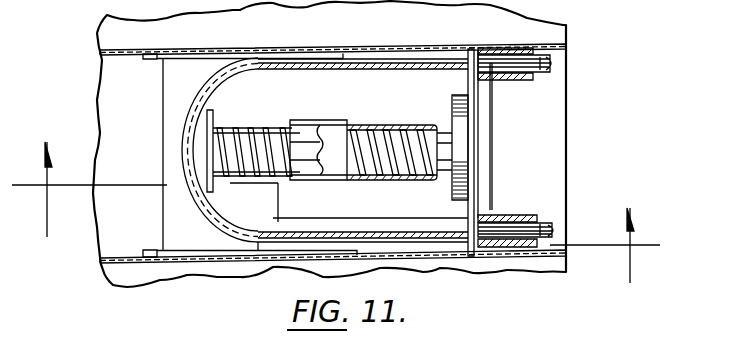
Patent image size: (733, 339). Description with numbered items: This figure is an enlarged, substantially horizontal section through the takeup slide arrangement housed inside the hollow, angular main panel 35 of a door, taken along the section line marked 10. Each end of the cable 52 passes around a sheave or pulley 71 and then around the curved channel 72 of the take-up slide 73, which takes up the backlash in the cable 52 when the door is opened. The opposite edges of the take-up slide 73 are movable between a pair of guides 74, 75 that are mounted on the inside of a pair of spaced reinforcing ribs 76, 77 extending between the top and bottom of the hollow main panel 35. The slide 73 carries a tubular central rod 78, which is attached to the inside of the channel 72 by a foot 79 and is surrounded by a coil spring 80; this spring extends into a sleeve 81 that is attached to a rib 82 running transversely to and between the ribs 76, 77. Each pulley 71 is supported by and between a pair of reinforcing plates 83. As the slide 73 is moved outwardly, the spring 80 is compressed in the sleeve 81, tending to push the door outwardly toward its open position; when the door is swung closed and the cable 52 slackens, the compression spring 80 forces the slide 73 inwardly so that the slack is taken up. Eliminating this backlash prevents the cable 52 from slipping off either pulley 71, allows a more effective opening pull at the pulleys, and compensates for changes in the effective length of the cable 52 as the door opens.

The section line 10- 10 is at (336, 212).
The main panel 35 is at (127, 276).
The cable 52 is at (400, 68).
The sheave 71 is at (541, 58).
The curved channel 72 is at (232, 80).
The take-up slide 73 is at (173, 128).
The guide 74 is at (157, 60).
The guide 75 is at (156, 250).
The reinforcing rib 76 is at (250, 50).
The reinforcing rib 77 is at (199, 264).
The tubular central rod 78 is at (340, 137).
The foot 79 is at (212, 115).
The coil spring 80 is at (261, 112).
The sleeve 81 is at (418, 126).
The rib 82 is at (486, 148).
The reinforcing plate 83 is at (515, 49).